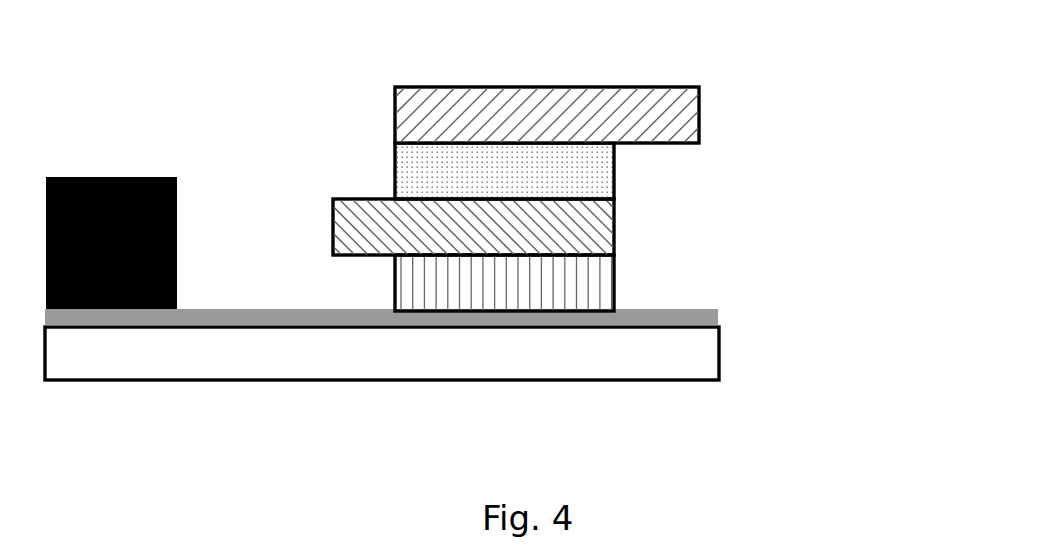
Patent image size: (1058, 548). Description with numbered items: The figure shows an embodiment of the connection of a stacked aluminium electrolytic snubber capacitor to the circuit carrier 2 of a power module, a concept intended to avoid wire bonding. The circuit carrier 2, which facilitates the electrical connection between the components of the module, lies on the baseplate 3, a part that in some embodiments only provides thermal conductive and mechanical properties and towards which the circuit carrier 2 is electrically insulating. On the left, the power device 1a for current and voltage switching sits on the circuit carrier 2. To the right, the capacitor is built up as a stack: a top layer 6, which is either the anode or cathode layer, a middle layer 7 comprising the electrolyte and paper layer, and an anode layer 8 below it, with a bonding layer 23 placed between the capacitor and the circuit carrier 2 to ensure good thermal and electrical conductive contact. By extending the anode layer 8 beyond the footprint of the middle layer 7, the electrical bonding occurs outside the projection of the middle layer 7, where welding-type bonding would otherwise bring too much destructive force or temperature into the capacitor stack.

The power device 1a is at (102, 177).
The circuit carrier 2 is at (720, 318).
The baseplate 3 is at (721, 357).
The top layer 6 is at (699, 112).
The middle layer 7 is at (614, 190).
The anode layer 8 is at (614, 237).
The bonding layer 23 is at (614, 285).